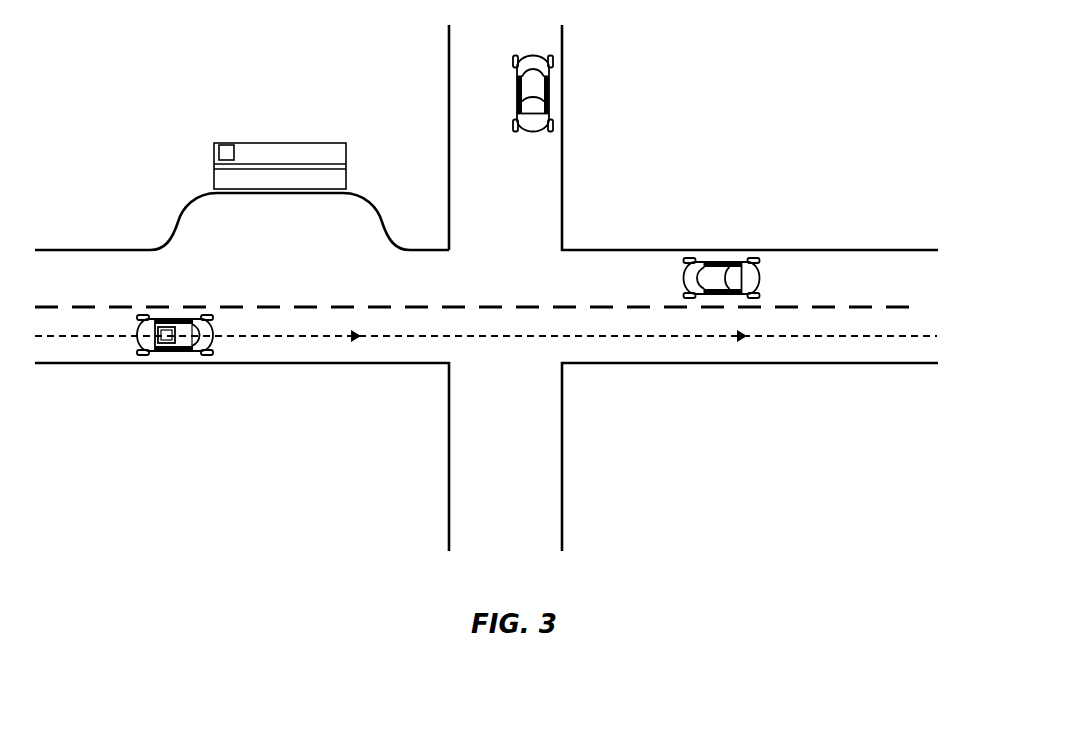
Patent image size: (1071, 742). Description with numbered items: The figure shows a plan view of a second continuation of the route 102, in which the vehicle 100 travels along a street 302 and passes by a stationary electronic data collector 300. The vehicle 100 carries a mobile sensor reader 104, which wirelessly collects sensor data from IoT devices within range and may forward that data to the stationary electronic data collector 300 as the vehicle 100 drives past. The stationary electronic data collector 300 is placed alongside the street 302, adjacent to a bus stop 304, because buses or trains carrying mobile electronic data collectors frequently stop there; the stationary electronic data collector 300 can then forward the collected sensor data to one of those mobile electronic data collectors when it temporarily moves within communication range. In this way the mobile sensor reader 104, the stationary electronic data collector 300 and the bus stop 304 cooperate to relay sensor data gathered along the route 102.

The vehicle 100 is at (137, 330).
The route 102 is at (587, 336).
The mobile sensor reader 104 is at (176, 335).
The stationary electronic data collector 300 is at (231, 143).
The street 302 is at (97, 250).
The bus stop 304 is at (313, 143).